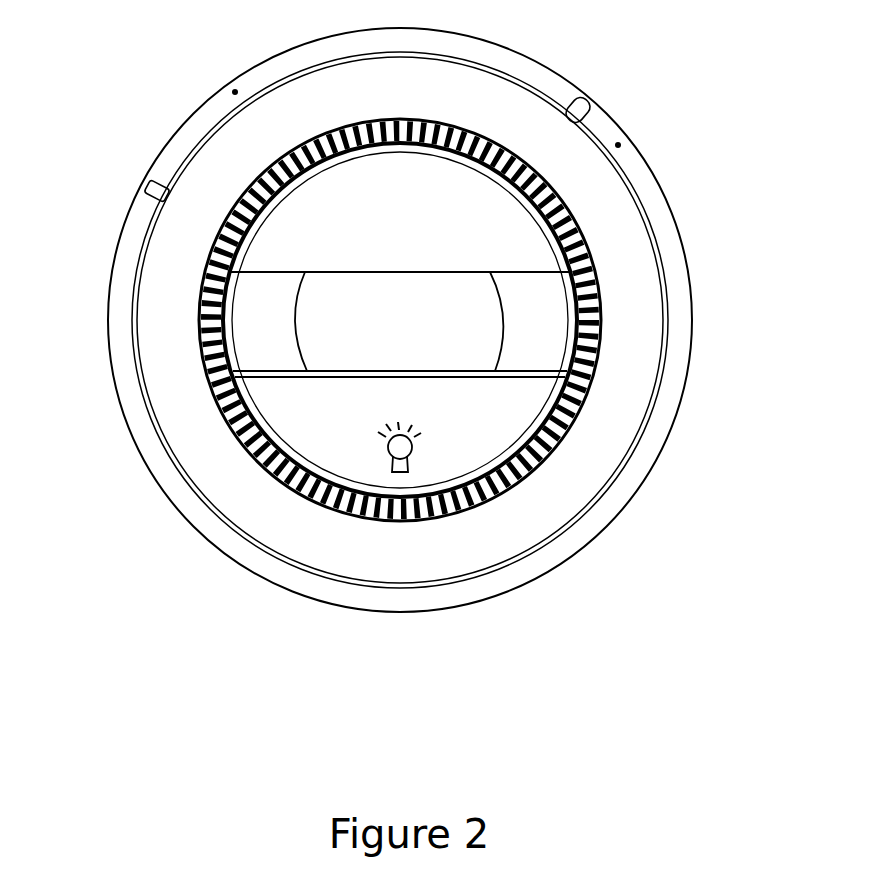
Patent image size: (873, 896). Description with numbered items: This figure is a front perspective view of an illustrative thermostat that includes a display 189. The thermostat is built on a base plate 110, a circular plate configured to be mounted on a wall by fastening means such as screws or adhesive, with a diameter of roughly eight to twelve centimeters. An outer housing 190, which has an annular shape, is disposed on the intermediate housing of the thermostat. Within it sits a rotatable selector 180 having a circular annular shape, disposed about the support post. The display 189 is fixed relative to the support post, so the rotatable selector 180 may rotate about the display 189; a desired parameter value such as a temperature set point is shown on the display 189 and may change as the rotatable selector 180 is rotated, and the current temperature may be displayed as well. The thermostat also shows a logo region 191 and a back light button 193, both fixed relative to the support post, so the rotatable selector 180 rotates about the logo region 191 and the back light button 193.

The base plate 110 is at (673, 277).
The rotatable selector 180 is at (603, 350).
The display 189 is at (355, 320).
The outer housing 190 is at (603, 430).
The logo region 191 is at (507, 217).
The back light button 193 is at (278, 408).